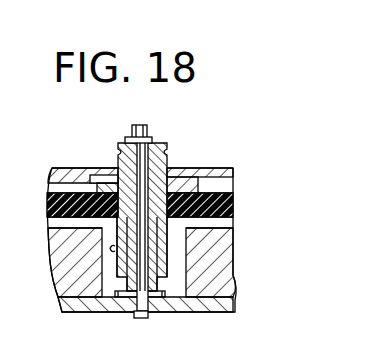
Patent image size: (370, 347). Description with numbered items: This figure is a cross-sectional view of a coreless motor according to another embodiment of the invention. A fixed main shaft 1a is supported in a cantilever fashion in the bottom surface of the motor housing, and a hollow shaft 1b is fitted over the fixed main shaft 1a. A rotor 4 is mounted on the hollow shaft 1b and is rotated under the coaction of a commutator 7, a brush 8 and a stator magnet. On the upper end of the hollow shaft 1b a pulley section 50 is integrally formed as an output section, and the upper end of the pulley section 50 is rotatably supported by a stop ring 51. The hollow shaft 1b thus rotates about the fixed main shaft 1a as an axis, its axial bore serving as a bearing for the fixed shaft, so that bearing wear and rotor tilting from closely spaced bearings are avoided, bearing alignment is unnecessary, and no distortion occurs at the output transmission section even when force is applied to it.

The pulley section 50 is at (118, 150).
The stop ring 51 is at (146, 150).
The fixed main shaft 1a is at (150, 151).
The hollow shaft 1b is at (165, 160).
The rotor 4 is at (48, 205).
The brush 8 is at (167, 246).
The commutator 7 is at (165, 278).